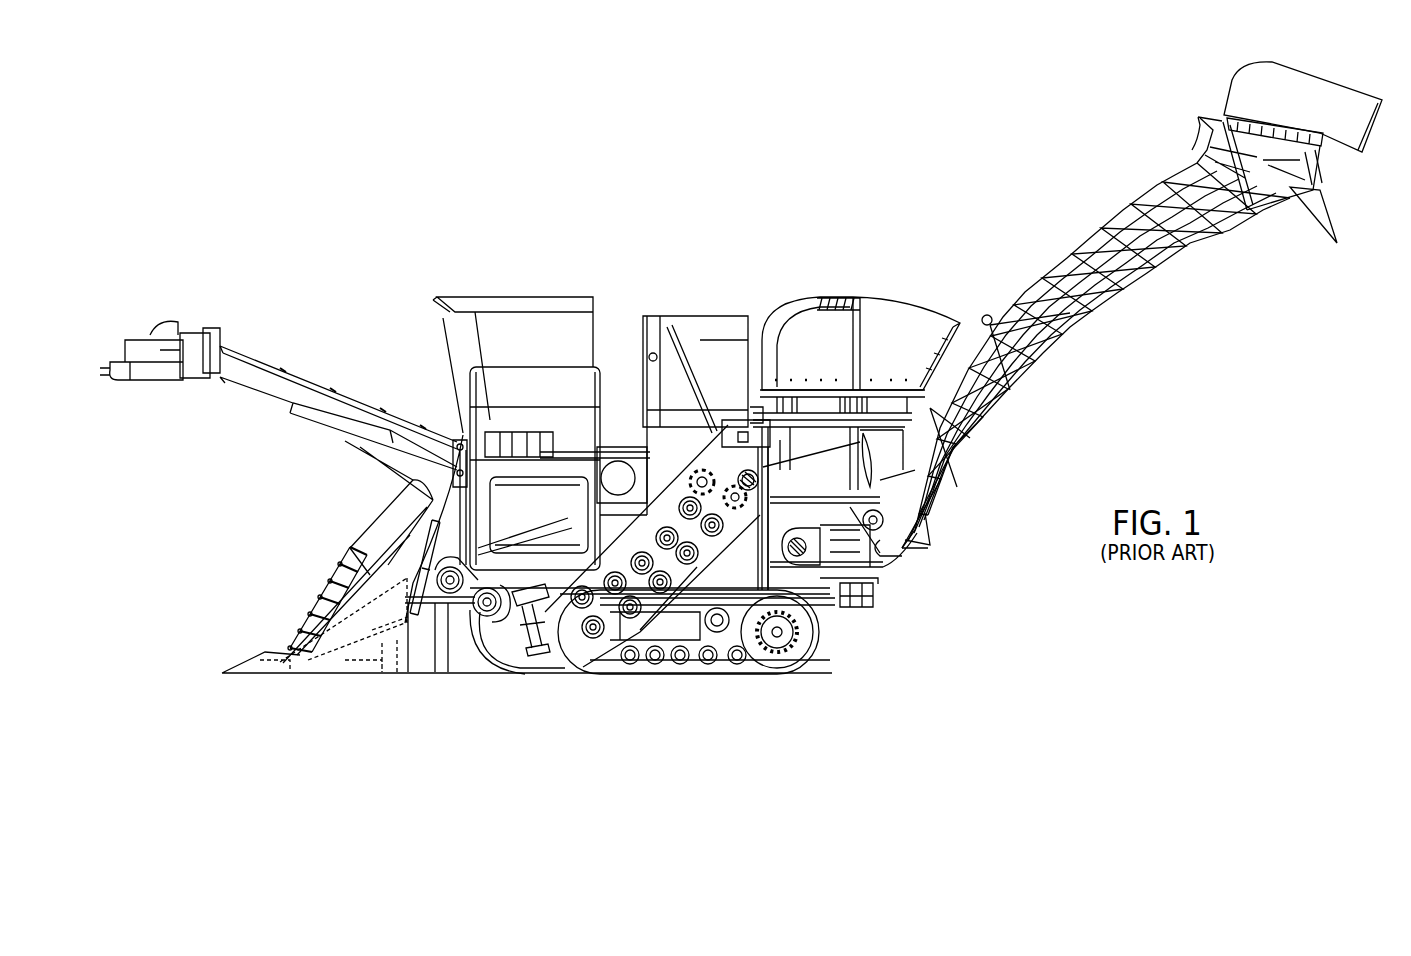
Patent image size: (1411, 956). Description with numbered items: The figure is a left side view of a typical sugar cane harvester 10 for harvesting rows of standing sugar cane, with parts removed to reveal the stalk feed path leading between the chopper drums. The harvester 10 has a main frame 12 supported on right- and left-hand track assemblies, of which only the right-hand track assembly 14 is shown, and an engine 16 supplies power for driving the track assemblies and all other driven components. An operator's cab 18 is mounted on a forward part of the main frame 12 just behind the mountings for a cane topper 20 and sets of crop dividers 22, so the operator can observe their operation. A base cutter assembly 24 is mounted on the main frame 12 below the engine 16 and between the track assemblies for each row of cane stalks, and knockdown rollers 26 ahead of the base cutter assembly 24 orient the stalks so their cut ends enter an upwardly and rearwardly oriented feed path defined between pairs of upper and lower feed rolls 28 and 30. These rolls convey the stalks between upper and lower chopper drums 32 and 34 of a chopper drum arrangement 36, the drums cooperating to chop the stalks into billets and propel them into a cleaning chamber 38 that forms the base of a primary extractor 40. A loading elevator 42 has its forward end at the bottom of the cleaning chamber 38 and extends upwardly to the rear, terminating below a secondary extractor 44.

The sugar cane harvester 10 is at (364, 242).
The main frame 12 is at (892, 596).
The right-hand track assembly 14 is at (611, 692).
The engine 16 is at (572, 590).
The operator's cab 18 is at (516, 413).
The cane topper 20 is at (191, 378).
The crop dividers 22 is at (320, 592).
The base cutter assembly 24 is at (568, 630).
The knockdown rollers 26 is at (465, 607).
The upper feed rolls 28 is at (605, 575).
The lower feed rolls 30 is at (712, 665).
The upper chopper drum 32 is at (658, 455).
The lower chopper drum 34 is at (772, 502).
The chopper drum arrangement 36 is at (698, 470).
The cleaning chamber 38 is at (855, 465).
The primary extractor 40 is at (903, 298).
The loading elevator 42 is at (1093, 317).
The secondary extractor 44 is at (1243, 88).